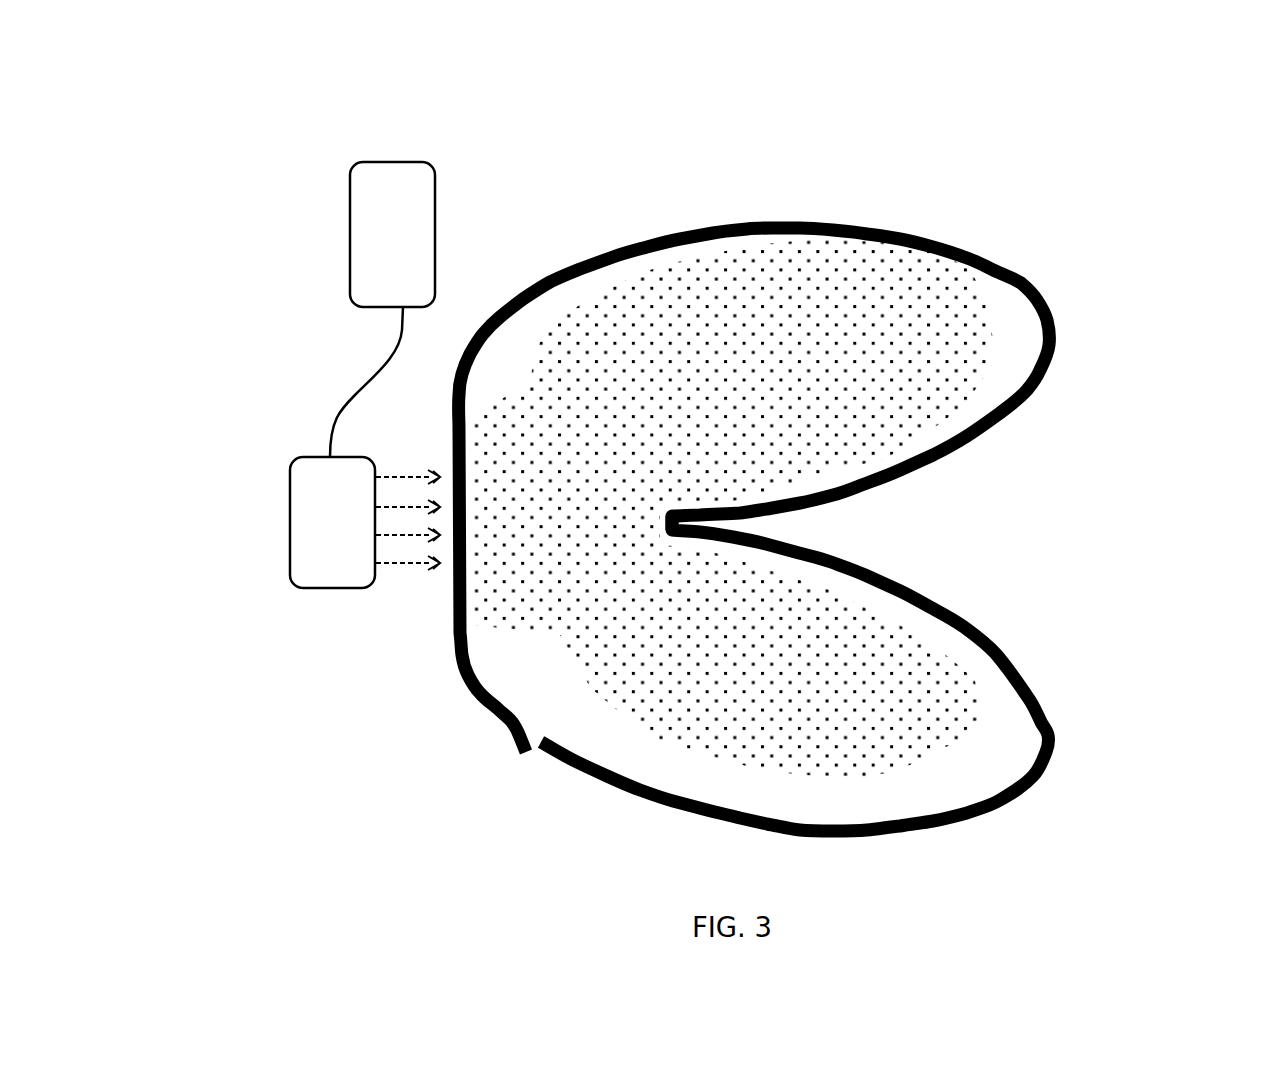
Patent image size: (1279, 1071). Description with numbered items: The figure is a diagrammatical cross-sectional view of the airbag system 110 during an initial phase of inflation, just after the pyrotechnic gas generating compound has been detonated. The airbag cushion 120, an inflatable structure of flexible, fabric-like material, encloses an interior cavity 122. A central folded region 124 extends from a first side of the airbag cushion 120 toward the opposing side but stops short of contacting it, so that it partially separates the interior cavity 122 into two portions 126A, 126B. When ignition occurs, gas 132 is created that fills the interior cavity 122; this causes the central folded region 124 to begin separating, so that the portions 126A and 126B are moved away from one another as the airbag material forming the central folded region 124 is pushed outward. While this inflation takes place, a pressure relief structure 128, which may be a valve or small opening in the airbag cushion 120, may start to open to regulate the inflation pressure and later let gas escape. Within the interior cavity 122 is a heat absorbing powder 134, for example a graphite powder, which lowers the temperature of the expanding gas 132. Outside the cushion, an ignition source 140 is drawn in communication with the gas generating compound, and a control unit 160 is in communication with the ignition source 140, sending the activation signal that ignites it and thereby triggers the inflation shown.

The airbag system 110 is at (252, 152).
The airbag cushion 120 is at (587, 262).
The interior cavity 122 is at (812, 262).
The central folded region 124 is at (975, 531).
The portion 126A is at (1120, 225).
The portion 126B is at (1140, 608).
The pressure relief structure 128 is at (538, 782).
The gas 132 is at (555, 505).
The heat absorbing powder 134 is at (827, 745).
The ignition source 140 is at (352, 531).
The control unit 160 is at (412, 256).